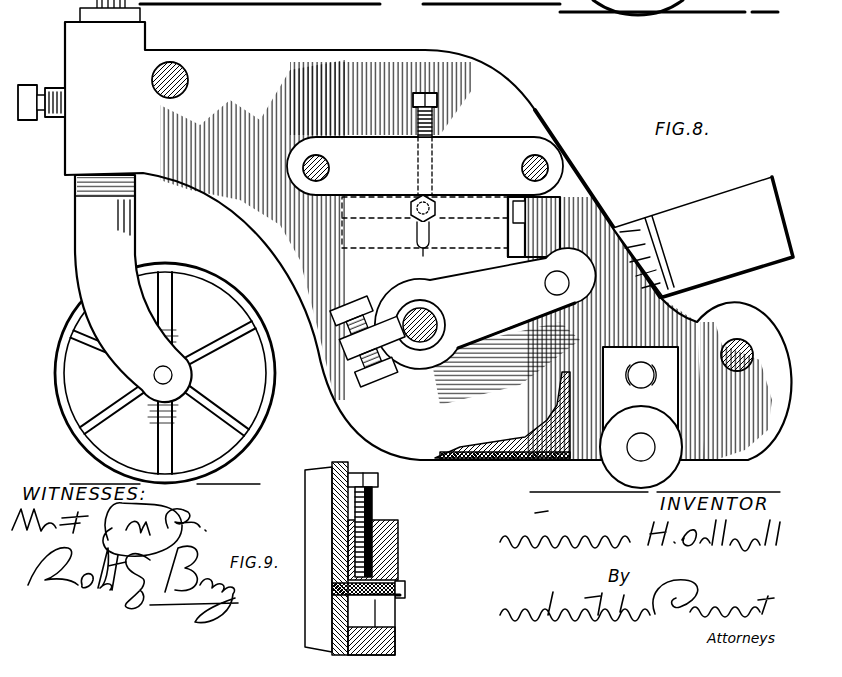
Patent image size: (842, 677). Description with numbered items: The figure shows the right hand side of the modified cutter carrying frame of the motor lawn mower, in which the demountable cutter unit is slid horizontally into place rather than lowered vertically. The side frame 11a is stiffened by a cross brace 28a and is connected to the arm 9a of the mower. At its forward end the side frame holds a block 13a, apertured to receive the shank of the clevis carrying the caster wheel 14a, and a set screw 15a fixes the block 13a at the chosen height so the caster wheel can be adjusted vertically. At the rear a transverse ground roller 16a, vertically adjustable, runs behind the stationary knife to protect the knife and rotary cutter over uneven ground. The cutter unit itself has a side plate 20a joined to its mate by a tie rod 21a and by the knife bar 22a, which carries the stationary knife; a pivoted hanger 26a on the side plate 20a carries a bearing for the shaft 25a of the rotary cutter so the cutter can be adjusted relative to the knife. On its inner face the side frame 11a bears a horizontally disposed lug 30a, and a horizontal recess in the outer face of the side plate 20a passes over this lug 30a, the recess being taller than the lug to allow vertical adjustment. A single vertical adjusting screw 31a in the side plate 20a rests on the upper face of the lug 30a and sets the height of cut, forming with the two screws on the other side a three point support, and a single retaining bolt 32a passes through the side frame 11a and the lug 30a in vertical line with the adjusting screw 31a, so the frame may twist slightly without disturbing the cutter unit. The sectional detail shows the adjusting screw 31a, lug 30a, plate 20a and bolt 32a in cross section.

In FIG. 8, the arm 9a is at (703, 237).
In FIG. 8, the side frame 11a is at (353, 60).
In FIG. 9, the side frame 11a is at (305, 515).
In FIG. 8, the block 13a is at (86, 190).
In FIG. 8, the caster wheel 14a is at (60, 395).
In FIG. 8, the set screw 15a is at (30, 118).
In FIG. 8, the ground roller 16a is at (622, 482).
In FIG. 8, the side plate 20a is at (498, 148).
In FIG. 9, the side plate 20a is at (400, 528).
In FIG. 8, the tie rod 21a is at (331, 168).
In FIG. 8, the knife bar 22a is at (536, 461).
In FIG. 8, the shaft 25a is at (427, 340).
In FIG. 8, the pivoted hanger 26a is at (485, 308).
In FIG. 8, the cross brace 28a is at (190, 80).
In FIG. 8, the lug 30a is at (520, 218).
In FIG. 9, the lug 30a is at (395, 610).
In FIG. 8, the adjusting screw 31a is at (412, 100).
In FIG. 9, the adjusting screw 31a is at (372, 505).
In FIG. 8, the retaining bolt 32a is at (436, 215).
In FIG. 9, the retaining bolt 32a is at (333, 590).